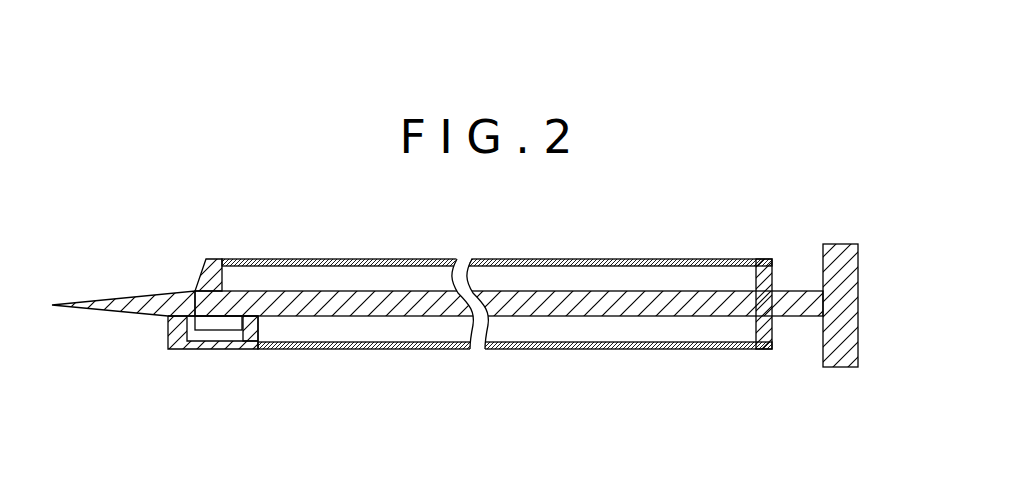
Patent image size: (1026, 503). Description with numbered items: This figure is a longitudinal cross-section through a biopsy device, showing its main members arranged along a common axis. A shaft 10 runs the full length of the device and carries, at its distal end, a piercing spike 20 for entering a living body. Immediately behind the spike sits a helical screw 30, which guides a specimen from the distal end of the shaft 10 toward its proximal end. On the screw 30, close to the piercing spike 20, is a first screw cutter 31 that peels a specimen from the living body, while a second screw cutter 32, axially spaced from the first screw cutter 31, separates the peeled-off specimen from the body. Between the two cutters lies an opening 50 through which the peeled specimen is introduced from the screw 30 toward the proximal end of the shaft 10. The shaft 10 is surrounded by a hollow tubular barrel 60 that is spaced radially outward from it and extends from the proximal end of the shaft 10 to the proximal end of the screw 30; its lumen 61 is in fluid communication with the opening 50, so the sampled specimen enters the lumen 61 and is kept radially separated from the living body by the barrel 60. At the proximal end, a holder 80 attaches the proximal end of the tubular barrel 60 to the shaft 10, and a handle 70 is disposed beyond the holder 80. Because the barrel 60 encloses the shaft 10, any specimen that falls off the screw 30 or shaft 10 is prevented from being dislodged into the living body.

The shaft 10 is at (537, 350).
The piercing spike 20 is at (108, 309).
The helical screw 30 is at (210, 257).
The first screw cutter 31 is at (167, 340).
The second screw cutter 32 is at (246, 330).
The opening 50 is at (218, 330).
The tubular barrel 60 is at (350, 350).
The lumen 61 is at (405, 332).
The handle 70 is at (835, 243).
The holder 80 is at (763, 258).